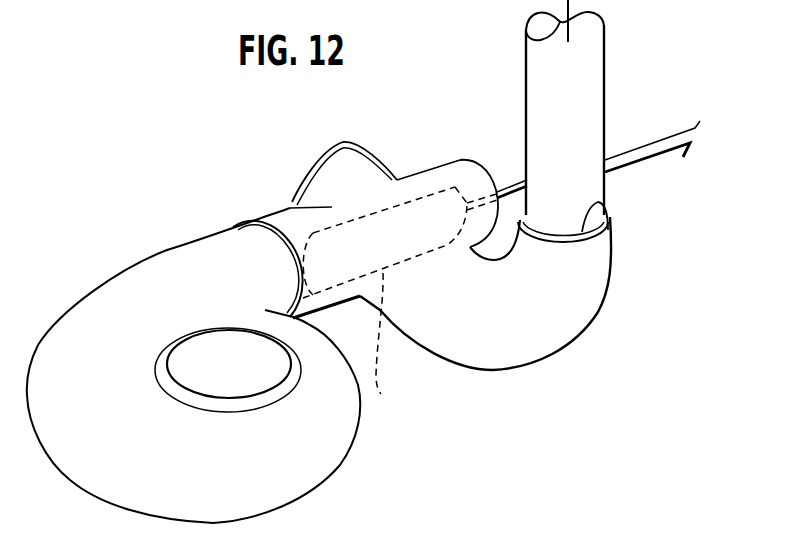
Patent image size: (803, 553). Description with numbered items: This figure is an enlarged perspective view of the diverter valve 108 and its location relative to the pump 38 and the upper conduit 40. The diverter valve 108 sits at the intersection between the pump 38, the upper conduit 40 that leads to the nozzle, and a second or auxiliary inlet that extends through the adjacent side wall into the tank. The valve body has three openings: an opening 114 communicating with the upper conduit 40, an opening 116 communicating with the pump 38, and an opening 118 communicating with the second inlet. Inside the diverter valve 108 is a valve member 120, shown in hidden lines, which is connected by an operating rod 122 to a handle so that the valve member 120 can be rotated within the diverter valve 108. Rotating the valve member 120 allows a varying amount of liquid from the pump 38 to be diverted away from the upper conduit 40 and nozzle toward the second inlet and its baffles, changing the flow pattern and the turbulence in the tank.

The pump 38 is at (117, 475).
The upper conduit 40 is at (540, 95).
The diverter valve 108 is at (394, 165).
The opening 114 is at (607, 193).
The opening 116 is at (280, 231).
The opening 118 is at (295, 205).
The valve member 120 is at (381, 394).
The operating rod 122 is at (640, 150).